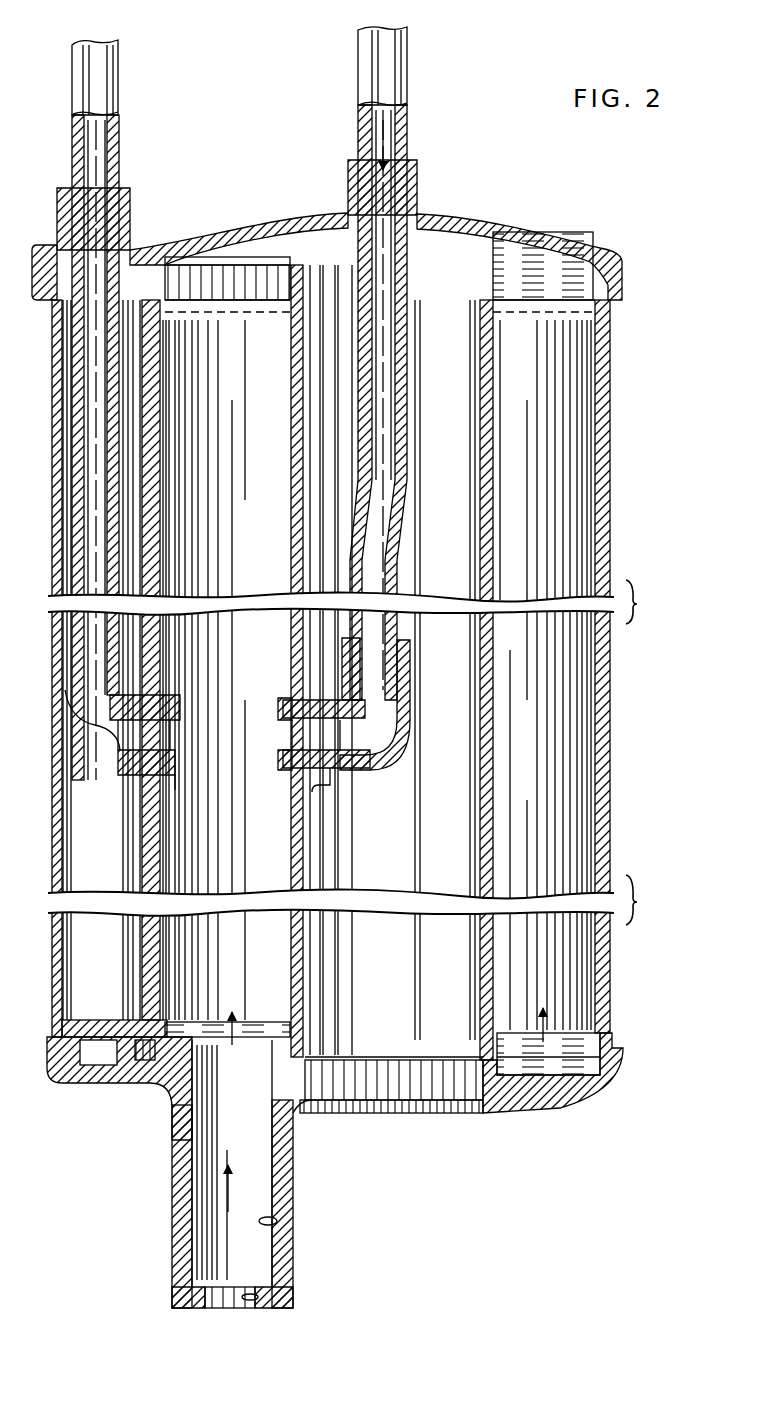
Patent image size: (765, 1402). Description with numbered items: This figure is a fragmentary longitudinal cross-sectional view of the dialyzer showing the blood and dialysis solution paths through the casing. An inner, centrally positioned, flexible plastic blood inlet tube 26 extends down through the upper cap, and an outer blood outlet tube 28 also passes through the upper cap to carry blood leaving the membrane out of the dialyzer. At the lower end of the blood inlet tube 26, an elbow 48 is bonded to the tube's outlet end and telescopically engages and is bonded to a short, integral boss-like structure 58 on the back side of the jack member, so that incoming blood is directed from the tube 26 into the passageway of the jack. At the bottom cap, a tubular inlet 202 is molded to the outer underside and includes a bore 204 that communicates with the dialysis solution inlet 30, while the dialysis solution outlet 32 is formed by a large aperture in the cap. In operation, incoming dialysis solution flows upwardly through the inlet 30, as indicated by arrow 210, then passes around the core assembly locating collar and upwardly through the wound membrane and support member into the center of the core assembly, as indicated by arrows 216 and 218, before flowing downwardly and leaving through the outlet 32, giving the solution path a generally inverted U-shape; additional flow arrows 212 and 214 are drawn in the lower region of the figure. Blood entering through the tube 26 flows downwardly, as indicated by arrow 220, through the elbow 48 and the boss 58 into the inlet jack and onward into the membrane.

The blood inlet tube 26 is at (407, 70).
The blood outlet tube 28 is at (118, 95).
The dialysis solution inlet 30 is at (258, 1297).
The dialysis solution outlet 32 is at (455, 1118).
The elbow 48 is at (400, 732).
The boss-like structure 58 is at (318, 760).
The tubular inlet 202 is at (160, 1232).
The bore 204 is at (275, 1221).
The arrow 210 is at (230, 1197).
The flow path 212 is at (235, 1040).
The flow path 214 is at (565, 1020).
The arrow 216 is at (258, 290).
The arrow 218 is at (470, 290).
The arrow 220 is at (385, 140).